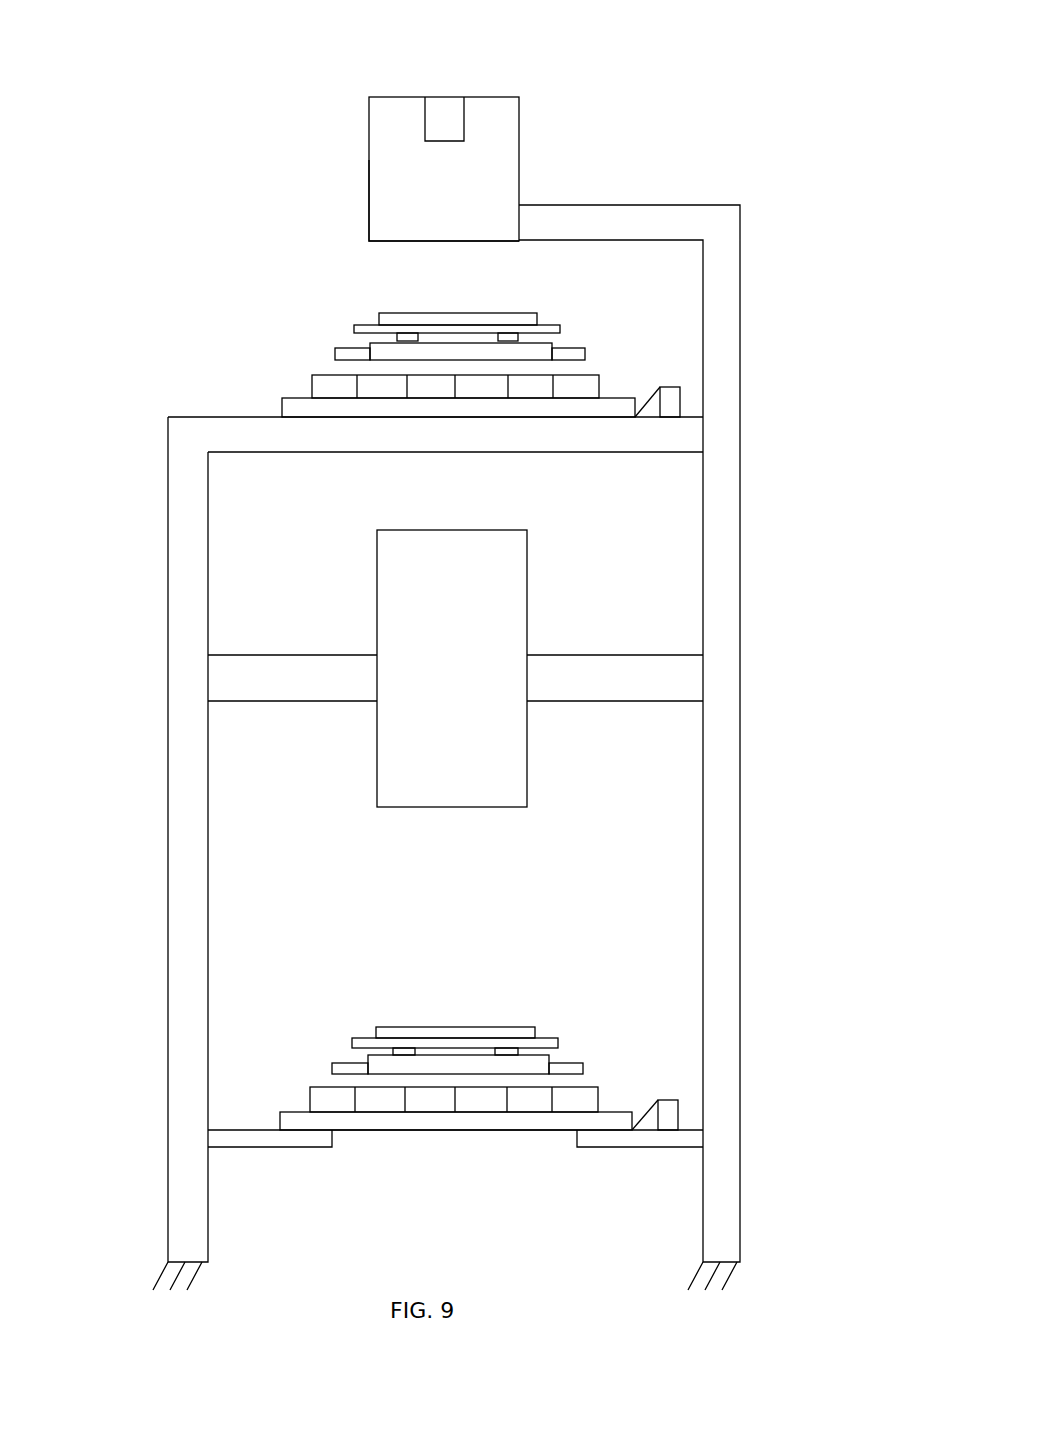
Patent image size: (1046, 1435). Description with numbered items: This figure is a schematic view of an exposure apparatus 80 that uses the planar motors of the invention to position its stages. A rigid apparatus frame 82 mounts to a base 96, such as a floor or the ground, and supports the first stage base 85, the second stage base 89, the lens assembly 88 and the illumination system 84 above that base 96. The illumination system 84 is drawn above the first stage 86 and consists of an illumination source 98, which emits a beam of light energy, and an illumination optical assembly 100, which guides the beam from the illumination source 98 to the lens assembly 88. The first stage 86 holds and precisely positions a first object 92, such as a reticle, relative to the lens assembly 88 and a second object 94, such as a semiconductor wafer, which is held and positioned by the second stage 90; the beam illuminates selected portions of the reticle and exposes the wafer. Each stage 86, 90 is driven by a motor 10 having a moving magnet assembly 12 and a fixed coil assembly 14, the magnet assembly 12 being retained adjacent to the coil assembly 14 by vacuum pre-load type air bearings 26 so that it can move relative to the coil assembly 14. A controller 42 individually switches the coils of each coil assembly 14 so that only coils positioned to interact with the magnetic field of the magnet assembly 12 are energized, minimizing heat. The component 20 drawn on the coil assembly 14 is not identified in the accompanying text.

The motor 10 is at (284, 726).
The magnet assembly 12 is at (540, 352).
The coil assembly 14 is at (280, 404).
The coil windings 20 is at (600, 387).
The vacuum pre-load type air bearing 26 is at (335, 349).
The controller 42 is at (680, 400).
The exposure apparatus 80 is at (740, 227).
The apparatus frame 82 is at (740, 762).
The illumination system 84 is at (598, 33).
The first stage base 85 is at (510, 416).
The first stage 86 is at (307, 260).
The lens assembly 88 is at (437, 612).
The second stage base 89 is at (299, 1147).
The second stage 90 is at (367, 1038).
The first object 92 is at (525, 313).
The second object 94 is at (518, 1027).
The base 96 is at (727, 1283).
The illumination source 98 is at (445, 112).
The illumination optical assembly 100 is at (477, 167).